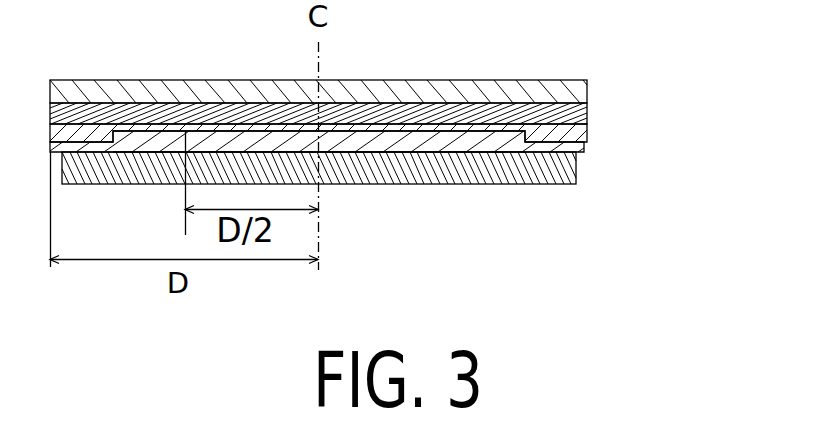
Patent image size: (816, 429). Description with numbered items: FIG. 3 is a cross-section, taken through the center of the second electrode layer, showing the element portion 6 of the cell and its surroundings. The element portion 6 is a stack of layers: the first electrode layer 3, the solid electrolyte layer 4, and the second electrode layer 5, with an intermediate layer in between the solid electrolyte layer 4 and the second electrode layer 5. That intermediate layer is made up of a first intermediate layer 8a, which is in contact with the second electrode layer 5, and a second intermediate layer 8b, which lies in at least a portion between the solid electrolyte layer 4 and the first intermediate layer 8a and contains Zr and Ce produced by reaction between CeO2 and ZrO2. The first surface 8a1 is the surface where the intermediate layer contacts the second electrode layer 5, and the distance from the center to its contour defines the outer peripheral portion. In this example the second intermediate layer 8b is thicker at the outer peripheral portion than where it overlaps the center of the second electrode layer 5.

The first electrode layer 3 is at (558, 92).
The solid electrolyte layer 4 is at (558, 113).
The second intermediate layer 8b is at (558, 134).
The first intermediate layer 8a is at (558, 150).
The first surface 8a1 is at (438, 153).
The second electrode layer 5 is at (570, 178).
The element portion 6 is at (400, 161).